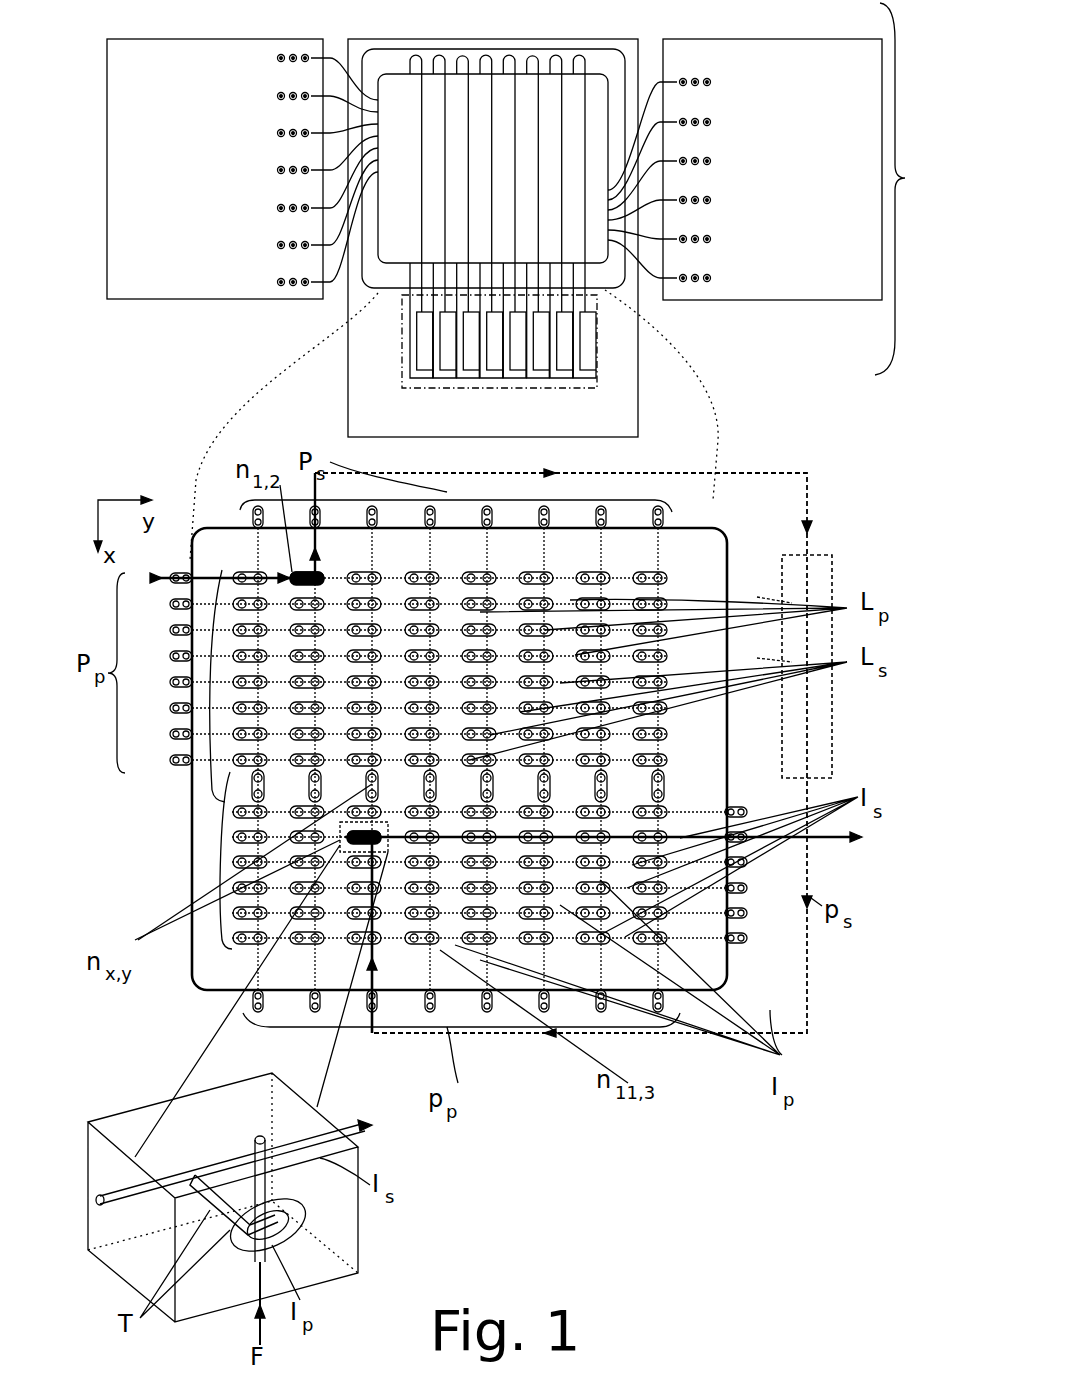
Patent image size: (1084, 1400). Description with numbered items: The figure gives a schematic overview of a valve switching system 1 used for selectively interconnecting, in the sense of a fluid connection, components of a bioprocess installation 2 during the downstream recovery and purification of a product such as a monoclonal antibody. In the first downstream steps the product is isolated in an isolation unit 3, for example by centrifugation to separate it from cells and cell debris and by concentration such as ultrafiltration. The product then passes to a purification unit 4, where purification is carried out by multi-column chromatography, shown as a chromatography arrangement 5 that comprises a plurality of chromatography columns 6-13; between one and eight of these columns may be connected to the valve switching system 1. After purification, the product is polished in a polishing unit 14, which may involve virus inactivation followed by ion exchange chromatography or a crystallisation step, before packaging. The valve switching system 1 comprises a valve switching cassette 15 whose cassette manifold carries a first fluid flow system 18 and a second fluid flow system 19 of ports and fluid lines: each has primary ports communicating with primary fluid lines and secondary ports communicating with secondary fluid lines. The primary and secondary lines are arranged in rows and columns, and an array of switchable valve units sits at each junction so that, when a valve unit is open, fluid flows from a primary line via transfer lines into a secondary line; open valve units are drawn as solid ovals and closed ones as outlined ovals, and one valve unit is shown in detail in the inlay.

The valve switching system 1 is at (692, 14).
The bioprocess installation 2 is at (900, 189).
The isolation unit 3 is at (240, 300).
The purification unit 4 is at (349, 330).
The chromatography arrangement 5 is at (597, 388).
The chromatography columns 6-13 is at (587, 396).
The polishing unit 14 is at (733, 300).
The valve switching cassette 15 is at (586, 49).
The first fluid flow system 18 is at (195, 708).
The second fluid flow system 19 is at (220, 866).